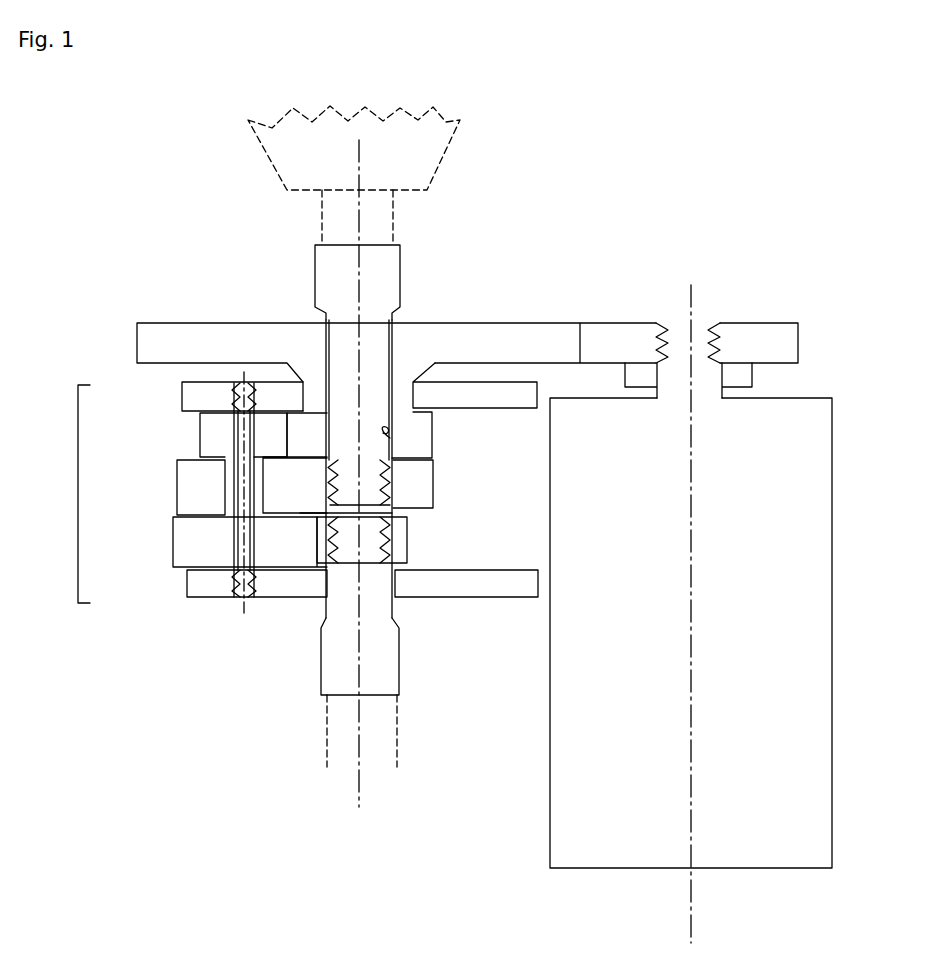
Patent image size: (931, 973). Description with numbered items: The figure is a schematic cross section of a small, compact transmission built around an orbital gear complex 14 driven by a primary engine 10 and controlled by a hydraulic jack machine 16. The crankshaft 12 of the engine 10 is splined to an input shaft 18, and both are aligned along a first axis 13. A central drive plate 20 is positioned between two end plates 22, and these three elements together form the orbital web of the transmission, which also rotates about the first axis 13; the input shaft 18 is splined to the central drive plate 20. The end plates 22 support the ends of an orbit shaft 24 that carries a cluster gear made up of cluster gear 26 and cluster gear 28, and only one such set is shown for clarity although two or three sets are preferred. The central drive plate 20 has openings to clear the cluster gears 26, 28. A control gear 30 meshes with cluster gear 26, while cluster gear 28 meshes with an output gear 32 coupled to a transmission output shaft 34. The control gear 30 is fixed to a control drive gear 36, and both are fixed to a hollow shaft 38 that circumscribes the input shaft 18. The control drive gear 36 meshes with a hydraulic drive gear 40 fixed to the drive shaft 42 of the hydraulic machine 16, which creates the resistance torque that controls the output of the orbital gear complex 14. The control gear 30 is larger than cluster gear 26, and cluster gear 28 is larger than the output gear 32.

The primary engine 10 is at (415, 150).
The crankshaft 12 is at (385, 210).
The first axis 13 is at (362, 798).
The orbital gear complex 14 is at (67, 494).
The hydraulic jack machine 16 is at (745, 658).
The input shaft 18 is at (327, 285).
The central drive plate 20 is at (193, 490).
The end plates 22 is at (202, 398).
The orbit shaft 24 is at (237, 595).
The cluster gear 26 is at (210, 437).
The cluster gear 28 is at (212, 537).
The control gear 30 is at (308, 442).
The output gear 32 is at (397, 542).
The transmission output shaft 34 is at (388, 662).
The control drive gear 36 is at (478, 328).
The hollow shaft 38 is at (390, 438).
The hydraulic drive gear 40 is at (763, 337).
The drive shaft 42 is at (708, 378).